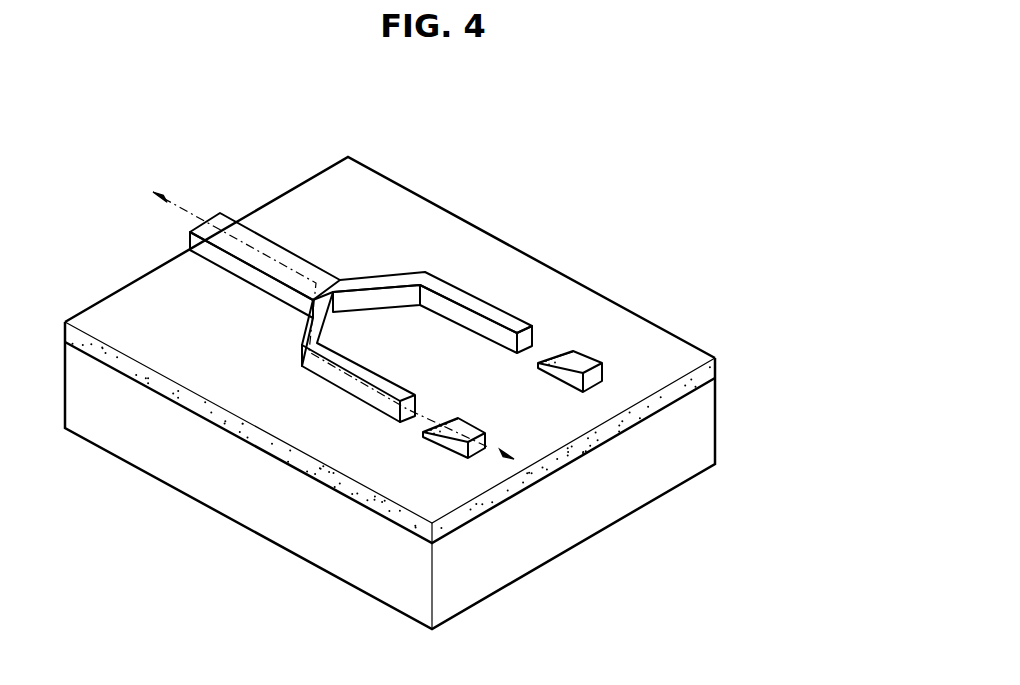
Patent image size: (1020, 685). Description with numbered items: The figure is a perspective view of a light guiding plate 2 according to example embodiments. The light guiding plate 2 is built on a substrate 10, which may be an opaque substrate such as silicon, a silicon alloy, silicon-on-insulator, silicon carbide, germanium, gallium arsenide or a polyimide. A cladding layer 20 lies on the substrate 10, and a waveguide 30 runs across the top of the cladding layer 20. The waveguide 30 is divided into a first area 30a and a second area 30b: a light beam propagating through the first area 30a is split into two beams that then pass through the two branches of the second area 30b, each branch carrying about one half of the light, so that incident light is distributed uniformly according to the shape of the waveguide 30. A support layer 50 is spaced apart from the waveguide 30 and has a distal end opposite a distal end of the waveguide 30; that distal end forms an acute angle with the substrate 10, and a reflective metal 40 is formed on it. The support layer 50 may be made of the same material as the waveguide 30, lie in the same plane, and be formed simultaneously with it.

The light guiding plate 2 is at (716, 285).
The substrate 10 is at (703, 430).
The cladding layer 20 is at (715, 370).
The waveguide 30 is at (332, 91).
The first area 30a is at (285, 255).
The second area 30b is at (446, 274).
The reflective metal 40 is at (555, 352).
The support layer 50 is at (583, 366).